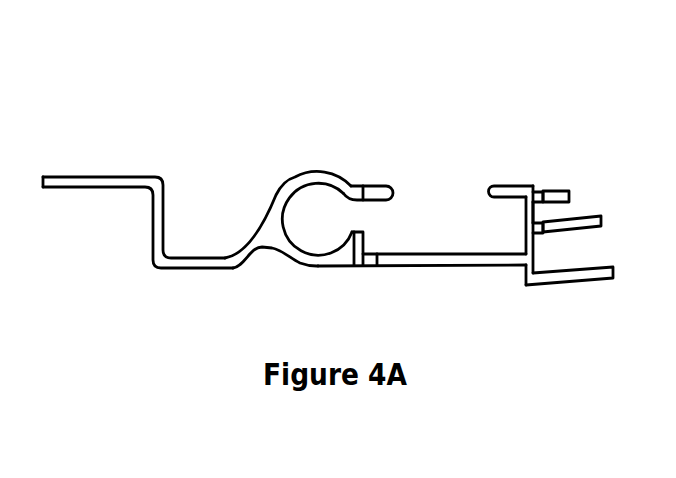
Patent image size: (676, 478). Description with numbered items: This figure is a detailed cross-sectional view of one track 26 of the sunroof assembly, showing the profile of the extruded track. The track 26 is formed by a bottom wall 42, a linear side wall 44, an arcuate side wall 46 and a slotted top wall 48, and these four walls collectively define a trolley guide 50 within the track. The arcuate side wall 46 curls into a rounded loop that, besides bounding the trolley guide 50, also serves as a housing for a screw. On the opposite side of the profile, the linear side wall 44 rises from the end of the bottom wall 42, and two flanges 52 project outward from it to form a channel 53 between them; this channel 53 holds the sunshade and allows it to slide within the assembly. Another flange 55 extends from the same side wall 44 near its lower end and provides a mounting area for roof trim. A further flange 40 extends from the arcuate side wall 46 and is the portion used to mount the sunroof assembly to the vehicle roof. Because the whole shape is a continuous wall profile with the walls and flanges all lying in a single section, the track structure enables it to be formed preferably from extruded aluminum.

The track 26 is at (358, 122).
The flange 40 is at (95, 177).
The bottom wall 42 is at (410, 265).
The linear side wall 44 is at (526, 230).
The arcuate side wall 46 is at (287, 193).
The slotted top wall 48 is at (487, 185).
The trolley guide 50 is at (430, 238).
The flanges 52 is at (569, 193).
The channel 53 is at (565, 220).
The flange 55 is at (565, 281).